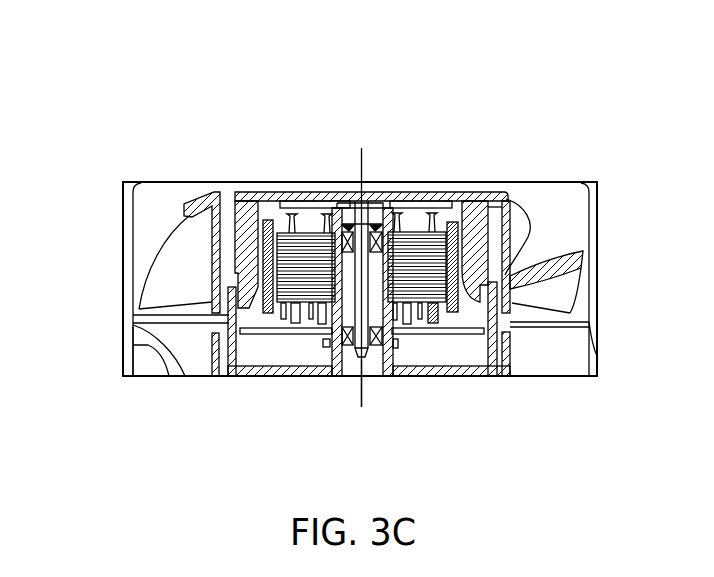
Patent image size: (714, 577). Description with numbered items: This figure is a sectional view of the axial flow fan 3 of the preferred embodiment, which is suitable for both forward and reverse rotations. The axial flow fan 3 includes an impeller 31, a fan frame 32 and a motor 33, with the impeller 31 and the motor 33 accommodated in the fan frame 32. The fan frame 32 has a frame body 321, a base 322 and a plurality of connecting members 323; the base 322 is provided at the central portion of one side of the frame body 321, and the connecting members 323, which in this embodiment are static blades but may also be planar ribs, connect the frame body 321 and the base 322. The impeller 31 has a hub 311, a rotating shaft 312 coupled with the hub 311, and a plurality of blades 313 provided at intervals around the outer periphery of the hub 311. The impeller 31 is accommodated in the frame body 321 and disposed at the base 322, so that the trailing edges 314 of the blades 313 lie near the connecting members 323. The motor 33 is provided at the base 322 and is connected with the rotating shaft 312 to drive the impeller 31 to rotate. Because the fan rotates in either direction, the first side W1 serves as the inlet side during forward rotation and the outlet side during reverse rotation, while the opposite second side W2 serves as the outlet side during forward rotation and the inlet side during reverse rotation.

The axial flow fan 3 is at (93, 107).
The impeller 31 is at (270, 191).
The hub 311 is at (497, 192).
The rotating shaft 312 is at (350, 310).
The blades 313 is at (550, 303).
The trailing edges 314 is at (177, 304).
The fan frame 32 is at (548, 182).
The frame body 321 is at (124, 353).
The base 322 is at (462, 368).
The connecting members 323 is at (164, 353).
The motor 33 is at (413, 326).
The first side W1 is at (368, 360).
The second side W2 is at (349, 182).